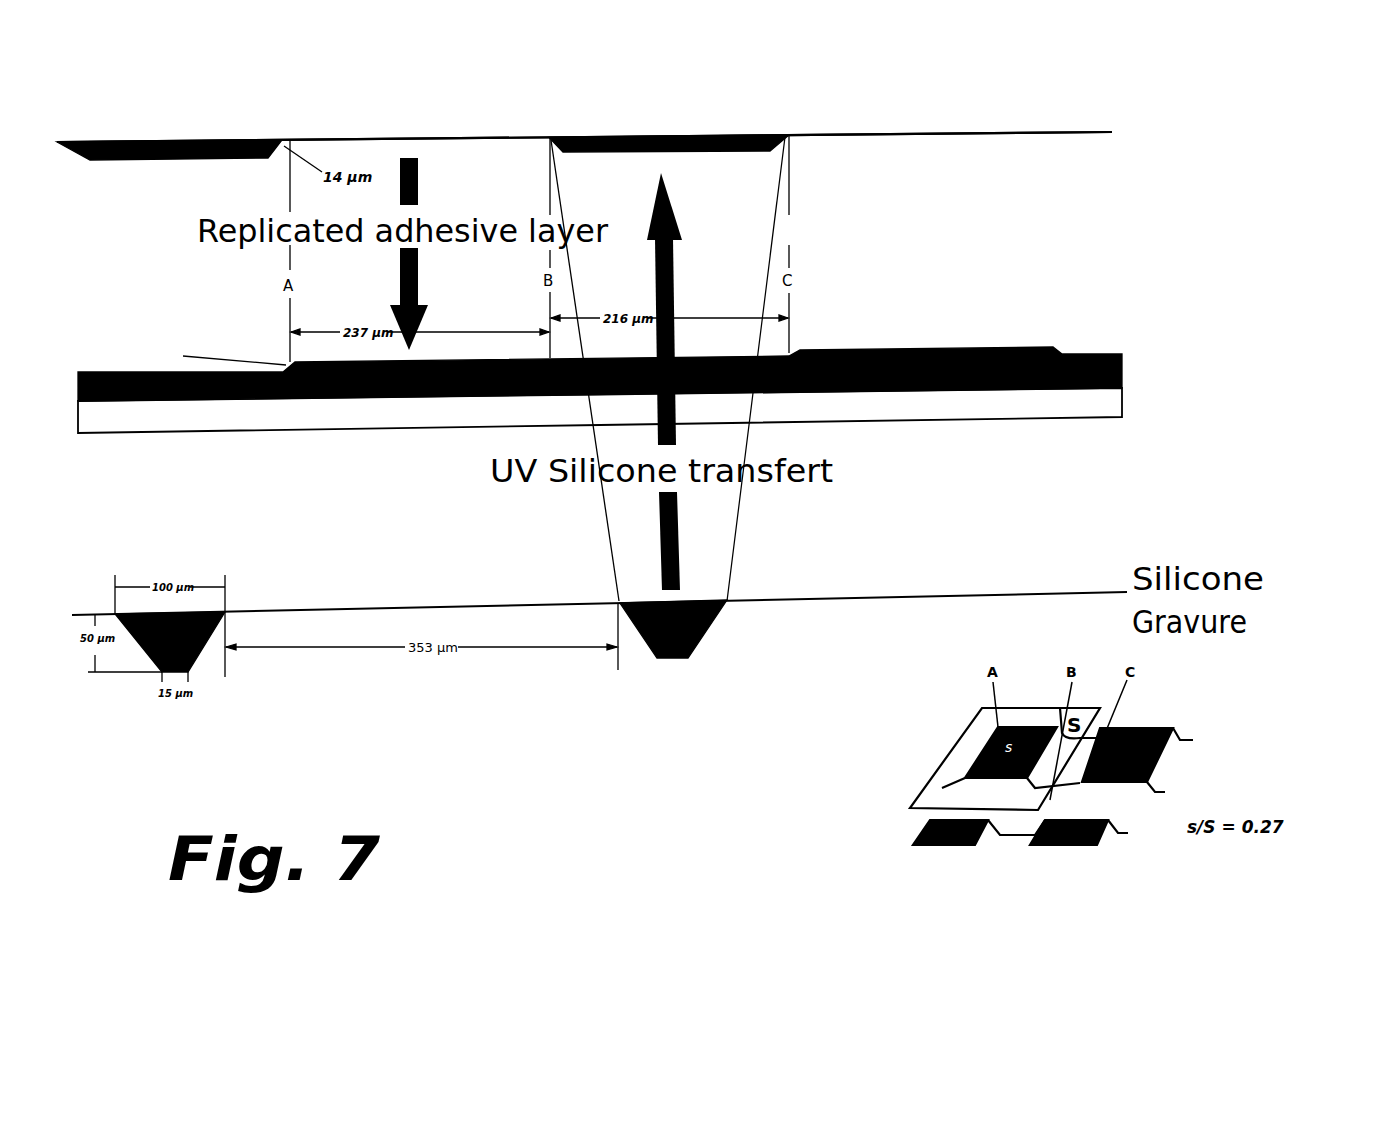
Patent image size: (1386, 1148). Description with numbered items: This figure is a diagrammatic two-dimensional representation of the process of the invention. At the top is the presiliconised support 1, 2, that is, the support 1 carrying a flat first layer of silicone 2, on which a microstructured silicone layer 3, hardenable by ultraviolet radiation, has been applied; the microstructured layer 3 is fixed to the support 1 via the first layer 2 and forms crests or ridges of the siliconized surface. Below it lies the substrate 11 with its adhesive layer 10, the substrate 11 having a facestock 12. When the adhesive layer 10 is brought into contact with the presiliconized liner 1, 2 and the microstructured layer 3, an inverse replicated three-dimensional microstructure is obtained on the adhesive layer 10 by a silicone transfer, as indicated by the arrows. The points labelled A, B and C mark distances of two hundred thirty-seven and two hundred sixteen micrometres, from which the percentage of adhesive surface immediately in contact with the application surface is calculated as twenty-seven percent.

The support 1 is at (708, 131).
The first layer of silicone 2 is at (683, 157).
The microstructured second layer of silicone 3 is at (700, 136).
The adhesive layer 10 is at (686, 372).
The substrate 11 is at (339, 414).
The facestock 12 is at (861, 405).